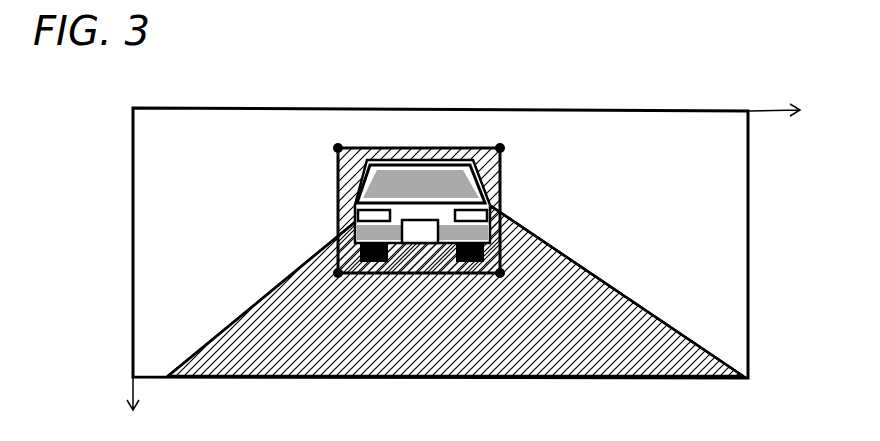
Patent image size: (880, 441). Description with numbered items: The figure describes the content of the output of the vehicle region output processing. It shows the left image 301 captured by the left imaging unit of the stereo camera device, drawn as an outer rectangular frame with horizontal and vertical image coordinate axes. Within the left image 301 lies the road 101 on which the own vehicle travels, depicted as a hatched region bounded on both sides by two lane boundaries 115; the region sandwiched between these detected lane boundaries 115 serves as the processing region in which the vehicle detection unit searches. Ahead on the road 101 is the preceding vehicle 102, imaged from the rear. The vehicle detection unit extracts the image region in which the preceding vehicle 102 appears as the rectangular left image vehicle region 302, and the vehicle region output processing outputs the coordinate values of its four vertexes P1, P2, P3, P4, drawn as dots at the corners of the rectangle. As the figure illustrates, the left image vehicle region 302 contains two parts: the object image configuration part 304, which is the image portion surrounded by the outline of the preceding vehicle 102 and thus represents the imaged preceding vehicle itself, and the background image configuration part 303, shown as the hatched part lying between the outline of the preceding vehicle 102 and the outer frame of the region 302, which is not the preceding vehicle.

The left image 301 is at (668, 110).
The left image vehicle region 302 is at (458, 148).
The background image configuration part 303 is at (338, 209).
The road 101 is at (568, 303).
The lane boundaries 115 is at (208, 340).
The preceding vehicle 102 is at (504, 211).
The object image configuration part 304 is at (490, 206).
The vertex P1 is at (338, 148).
The vertex P2 is at (500, 148).
The vertex P3 is at (338, 273).
The vertex P4 is at (500, 272).